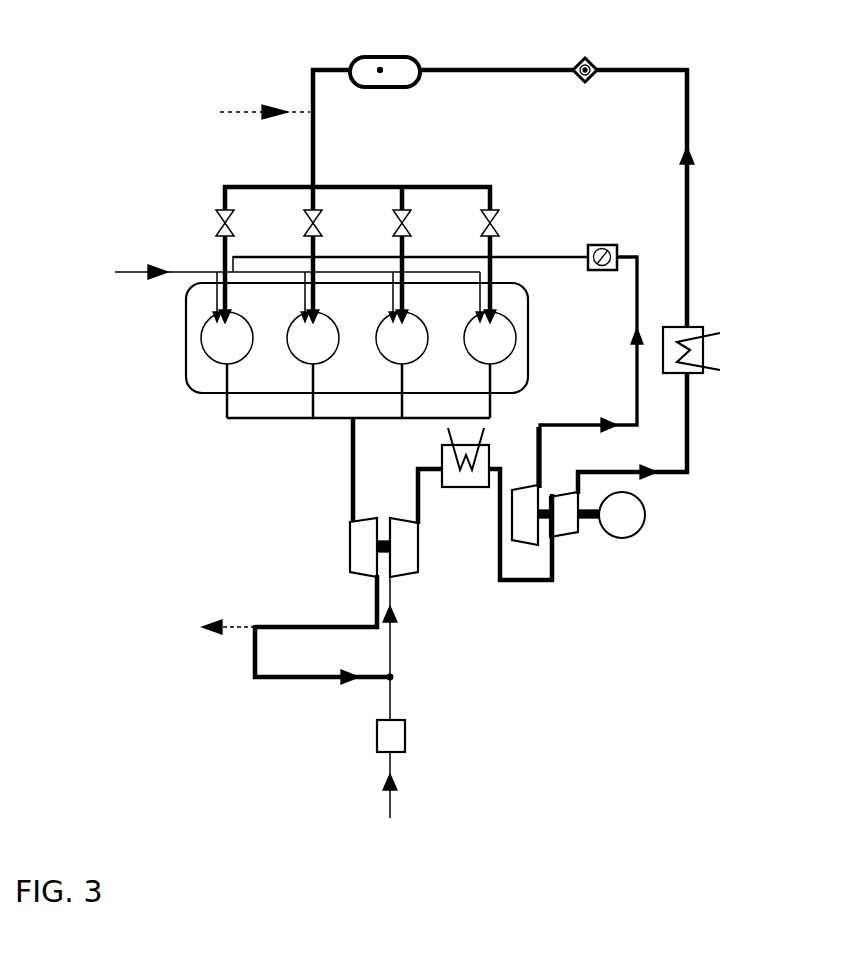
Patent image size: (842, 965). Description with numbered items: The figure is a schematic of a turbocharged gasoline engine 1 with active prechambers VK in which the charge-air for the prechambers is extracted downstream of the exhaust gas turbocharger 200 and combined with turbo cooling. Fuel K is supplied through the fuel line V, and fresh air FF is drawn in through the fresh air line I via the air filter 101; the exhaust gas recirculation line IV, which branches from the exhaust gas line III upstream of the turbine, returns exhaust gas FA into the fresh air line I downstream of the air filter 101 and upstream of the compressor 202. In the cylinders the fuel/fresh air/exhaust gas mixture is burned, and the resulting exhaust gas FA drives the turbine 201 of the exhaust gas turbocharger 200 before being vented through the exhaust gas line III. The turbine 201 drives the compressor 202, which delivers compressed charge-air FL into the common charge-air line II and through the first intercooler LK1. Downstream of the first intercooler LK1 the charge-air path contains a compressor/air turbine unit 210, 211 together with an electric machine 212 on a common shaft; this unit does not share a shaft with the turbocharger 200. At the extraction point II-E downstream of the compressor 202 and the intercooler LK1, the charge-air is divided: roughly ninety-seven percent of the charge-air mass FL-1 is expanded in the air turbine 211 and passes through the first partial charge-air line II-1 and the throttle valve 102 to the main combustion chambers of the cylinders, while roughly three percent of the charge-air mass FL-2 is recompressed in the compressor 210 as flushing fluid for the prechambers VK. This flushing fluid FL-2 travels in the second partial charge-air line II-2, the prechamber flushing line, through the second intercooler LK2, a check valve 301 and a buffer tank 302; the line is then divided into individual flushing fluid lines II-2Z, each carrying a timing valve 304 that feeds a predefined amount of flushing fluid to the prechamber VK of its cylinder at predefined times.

The gasoline engine 1 is at (162, 347).
The air filter 101 is at (400, 737).
The throttle valve 102 is at (603, 244).
The exhaust gas turbocharger 200 is at (385, 512).
The turbine 201 is at (360, 543).
The compressor 202 is at (410, 566).
The compressor/air turbine unit 210 is at (527, 516).
The air turbine 211 is at (567, 517).
The electric machine 212 is at (642, 515).
The check valve 301 is at (584, 60).
The buffer tank 302 is at (380, 70).
The timing valves 304 is at (310, 210).
The prechamber VK is at (240, 318).
The first intercooler LK1 is at (490, 451).
The second intercooler LK2 is at (706, 350).
The fuel K is at (290, 292).
The fresh air line I is at (393, 698).
The common charge-air line II is at (421, 510).
The exhaust gas line III is at (305, 624).
The exhaust gas recirculation line IV is at (283, 680).
The fuel line V is at (231, 110).
The exhaust gas FA is at (207, 634).
The fresh air FF is at (393, 806).
The compressed charge-air FL is at (426, 468).
The first partial charge-air line II-1 is at (635, 306).
The second partial charge-air line II-2 is at (690, 122).
The charge-air for the main combustion chambers FL-1 is at (635, 374).
The flushing fluid FL-2 is at (690, 187).
The individual flushing fluid line II-2Z is at (305, 92).
The extraction point II-E is at (519, 602).